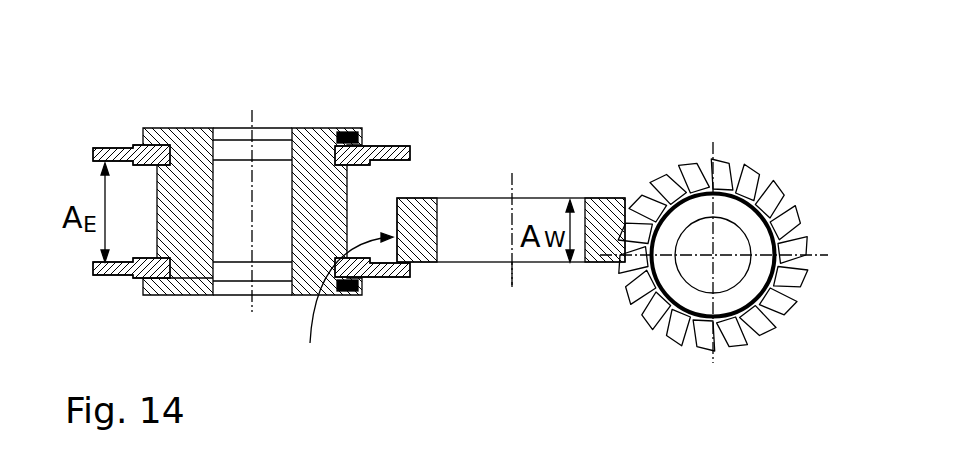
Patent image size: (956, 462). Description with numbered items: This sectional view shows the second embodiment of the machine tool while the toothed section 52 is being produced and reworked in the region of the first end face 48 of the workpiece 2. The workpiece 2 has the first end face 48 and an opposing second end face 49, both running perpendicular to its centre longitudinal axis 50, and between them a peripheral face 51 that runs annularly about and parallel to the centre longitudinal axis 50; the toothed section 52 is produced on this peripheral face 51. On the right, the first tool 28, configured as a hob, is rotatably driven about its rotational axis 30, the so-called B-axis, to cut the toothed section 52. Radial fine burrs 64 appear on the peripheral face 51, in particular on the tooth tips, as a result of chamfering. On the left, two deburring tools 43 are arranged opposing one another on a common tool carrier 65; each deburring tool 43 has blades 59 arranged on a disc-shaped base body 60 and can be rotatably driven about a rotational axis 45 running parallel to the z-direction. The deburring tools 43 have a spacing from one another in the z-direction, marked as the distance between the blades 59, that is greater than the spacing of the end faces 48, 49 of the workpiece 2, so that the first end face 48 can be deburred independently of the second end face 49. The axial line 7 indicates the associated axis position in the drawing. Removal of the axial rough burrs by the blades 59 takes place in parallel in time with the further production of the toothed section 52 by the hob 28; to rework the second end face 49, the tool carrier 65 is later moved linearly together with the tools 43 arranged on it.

The workpiece 2 is at (467, 198).
The shaft axis 7 is at (513, 185).
The first tool 28 is at (685, 168).
The rotational axis 30 is at (715, 250).
The second tool 43 is at (303, 128).
The rotational axis 45 is at (252, 148).
The first end face 48 is at (397, 208).
The second end face 49 is at (422, 198).
The centre longitudinal axis 50 is at (513, 272).
The peripheral face 51 is at (373, 277).
The toothed section 52 is at (343, 304).
The blades 59 is at (118, 148).
The disc-shaped base body 60 is at (198, 278).
The radial fine burrs 64 is at (634, 258).
The tool carrier 65 is at (207, 185).